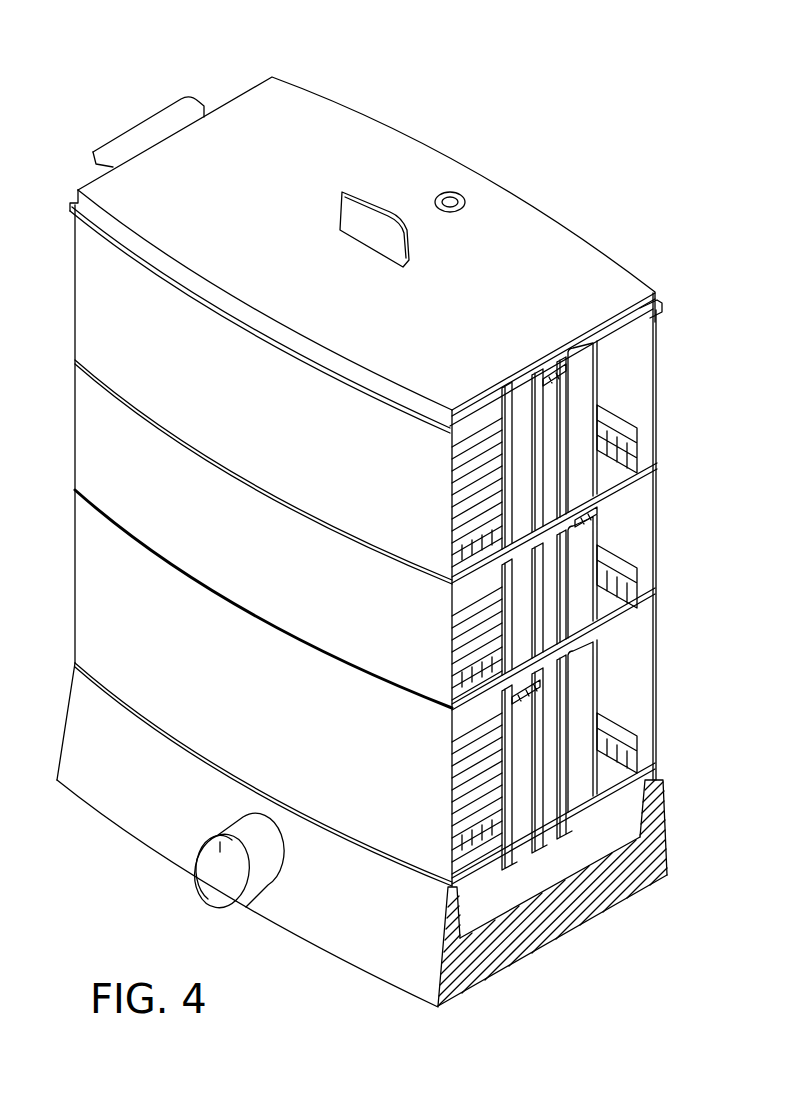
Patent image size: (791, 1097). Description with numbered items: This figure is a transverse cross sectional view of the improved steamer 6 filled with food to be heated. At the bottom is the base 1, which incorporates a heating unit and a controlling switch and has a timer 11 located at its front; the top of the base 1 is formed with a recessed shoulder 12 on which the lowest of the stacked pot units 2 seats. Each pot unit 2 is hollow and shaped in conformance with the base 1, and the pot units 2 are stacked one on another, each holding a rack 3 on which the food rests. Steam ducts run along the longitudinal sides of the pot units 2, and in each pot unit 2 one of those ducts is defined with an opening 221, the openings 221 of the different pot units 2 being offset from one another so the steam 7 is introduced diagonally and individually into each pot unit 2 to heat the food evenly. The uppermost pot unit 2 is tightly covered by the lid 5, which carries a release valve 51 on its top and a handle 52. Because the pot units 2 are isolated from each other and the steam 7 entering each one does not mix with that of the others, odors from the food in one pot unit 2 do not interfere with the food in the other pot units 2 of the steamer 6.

The base 1 is at (122, 807).
The timer 11 is at (207, 862).
The recessed shoulder 12 is at (648, 770).
The pot unit 2 is at (110, 302).
The opening 221 is at (565, 375).
The rack 3 is at (610, 437).
The lid 5 is at (530, 245).
The release valve 51 is at (451, 200).
The handle 52 is at (366, 216).
The steamer 6 is at (641, 216).
The steam 7 is at (560, 410).